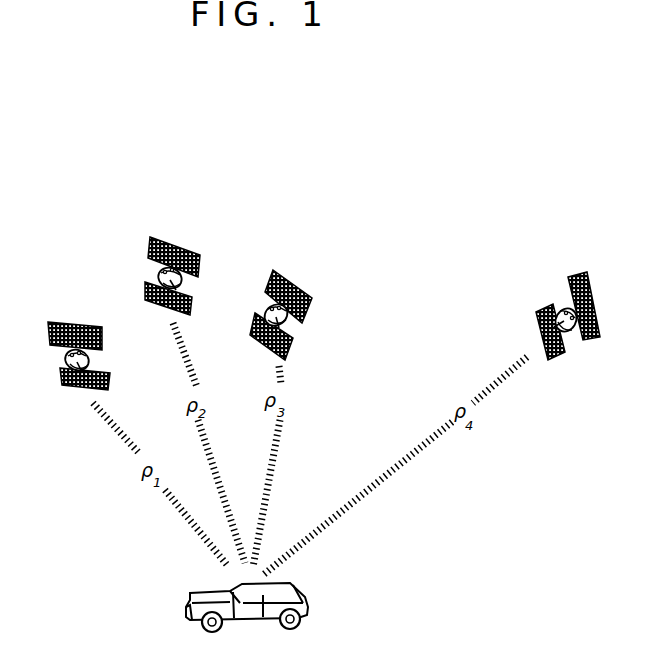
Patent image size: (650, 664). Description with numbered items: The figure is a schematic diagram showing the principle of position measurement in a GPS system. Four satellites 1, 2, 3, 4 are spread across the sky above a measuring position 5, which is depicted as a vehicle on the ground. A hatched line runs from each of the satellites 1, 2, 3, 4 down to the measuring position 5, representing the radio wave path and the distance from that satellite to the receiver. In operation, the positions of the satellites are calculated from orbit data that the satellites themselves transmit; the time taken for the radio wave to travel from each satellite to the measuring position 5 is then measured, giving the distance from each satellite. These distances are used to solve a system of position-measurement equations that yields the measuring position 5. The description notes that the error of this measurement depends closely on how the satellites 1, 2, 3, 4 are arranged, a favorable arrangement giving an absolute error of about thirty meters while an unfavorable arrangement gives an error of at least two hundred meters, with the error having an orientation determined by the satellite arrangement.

The satellite 1 is at (72, 320).
The satellite 2 is at (173, 245).
The satellite 3 is at (296, 283).
The satellite 4 is at (546, 307).
The measuring position 5 is at (207, 588).